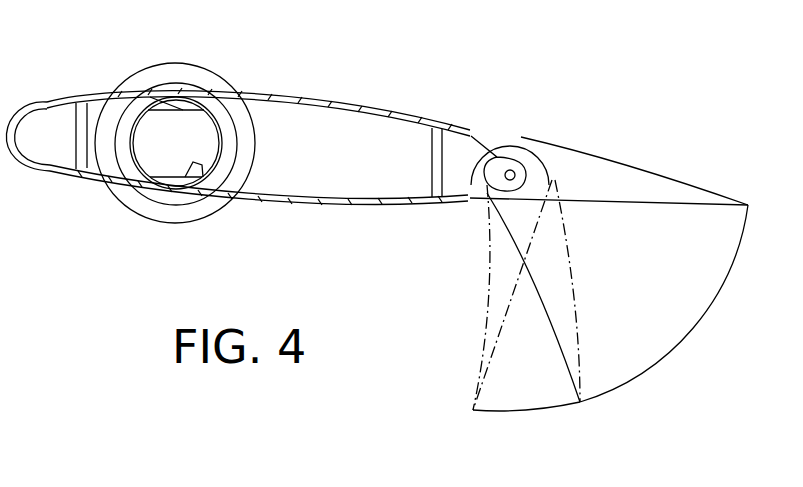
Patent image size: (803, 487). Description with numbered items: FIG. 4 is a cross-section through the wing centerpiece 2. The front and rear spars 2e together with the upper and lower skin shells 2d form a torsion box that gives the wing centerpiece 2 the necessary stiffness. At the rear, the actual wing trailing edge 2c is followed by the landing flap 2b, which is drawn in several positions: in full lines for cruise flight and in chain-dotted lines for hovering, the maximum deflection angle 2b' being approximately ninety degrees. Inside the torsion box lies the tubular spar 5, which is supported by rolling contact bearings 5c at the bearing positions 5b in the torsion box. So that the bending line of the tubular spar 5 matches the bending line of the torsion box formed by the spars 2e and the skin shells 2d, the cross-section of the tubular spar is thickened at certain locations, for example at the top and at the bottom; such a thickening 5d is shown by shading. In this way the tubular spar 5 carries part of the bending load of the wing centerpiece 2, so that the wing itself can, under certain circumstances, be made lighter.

The wing centerpiece 2 is at (375, 217).
The landing flap 2b is at (609, 169).
The maximum deflection angle 2b' is at (587, 295).
The wing trailing edge 2c is at (520, 134).
The skin shells 2d is at (330, 98).
The spars 2e is at (74, 138).
The tubular spar 5 is at (150, 163).
The bearing positions 5b is at (177, 61).
The rolling contact bearings 5c is at (186, 100).
The thickening 5d is at (226, 185).